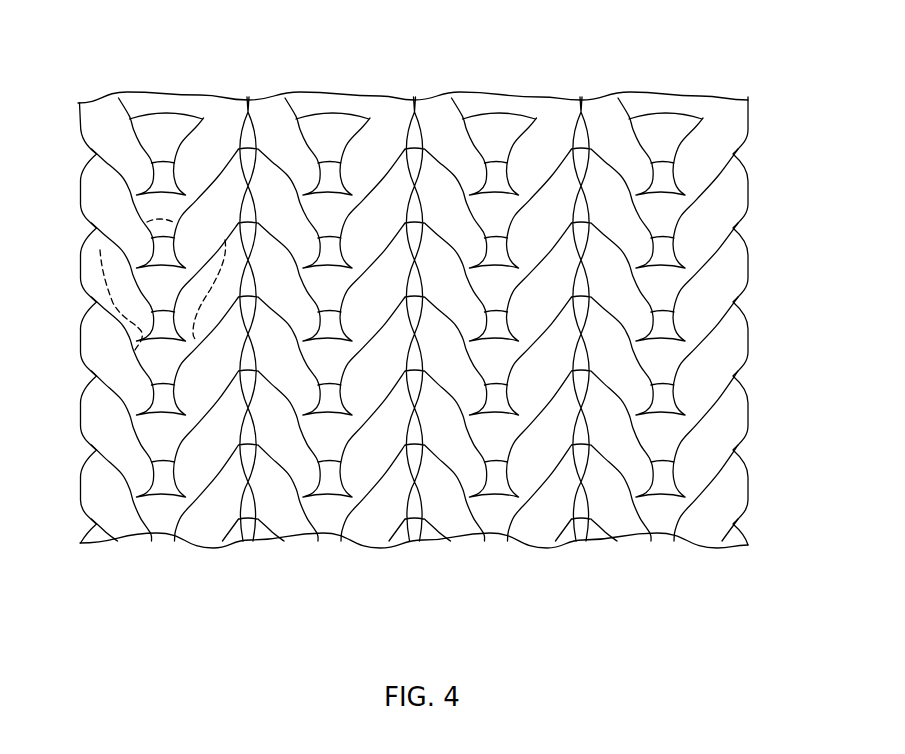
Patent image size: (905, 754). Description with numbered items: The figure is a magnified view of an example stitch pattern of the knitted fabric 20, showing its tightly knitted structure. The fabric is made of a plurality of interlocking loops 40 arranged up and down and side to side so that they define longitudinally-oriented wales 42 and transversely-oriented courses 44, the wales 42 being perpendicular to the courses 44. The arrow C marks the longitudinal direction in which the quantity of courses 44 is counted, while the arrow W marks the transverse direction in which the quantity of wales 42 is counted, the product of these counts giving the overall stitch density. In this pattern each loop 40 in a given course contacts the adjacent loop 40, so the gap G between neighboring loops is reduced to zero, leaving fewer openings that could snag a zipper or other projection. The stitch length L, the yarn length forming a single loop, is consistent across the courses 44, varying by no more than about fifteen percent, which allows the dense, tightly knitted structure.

The knitted fabric 20 is at (148, 43).
The interlocking loops 40 is at (223, 108).
The wales 42 is at (154, 549).
The courses 44 is at (751, 167).
The gap G is at (249, 483).
The stitch length L is at (97, 260).
The arrow W is at (352, 42).
The arrow C is at (51, 292).